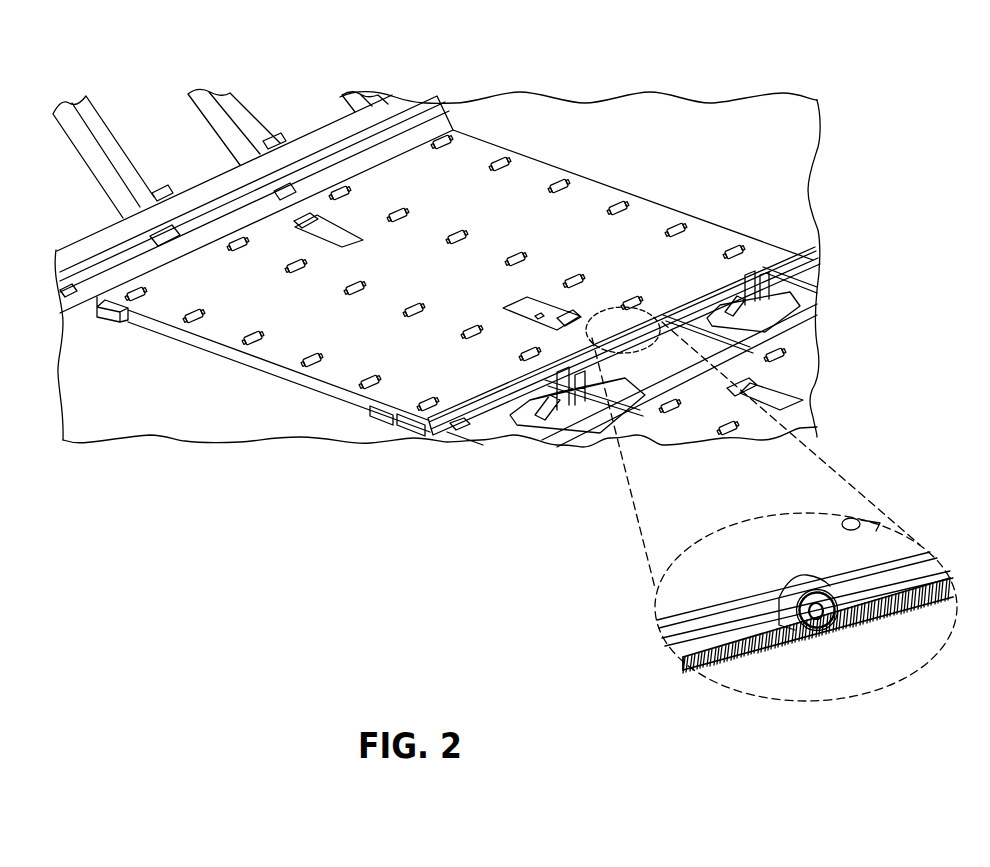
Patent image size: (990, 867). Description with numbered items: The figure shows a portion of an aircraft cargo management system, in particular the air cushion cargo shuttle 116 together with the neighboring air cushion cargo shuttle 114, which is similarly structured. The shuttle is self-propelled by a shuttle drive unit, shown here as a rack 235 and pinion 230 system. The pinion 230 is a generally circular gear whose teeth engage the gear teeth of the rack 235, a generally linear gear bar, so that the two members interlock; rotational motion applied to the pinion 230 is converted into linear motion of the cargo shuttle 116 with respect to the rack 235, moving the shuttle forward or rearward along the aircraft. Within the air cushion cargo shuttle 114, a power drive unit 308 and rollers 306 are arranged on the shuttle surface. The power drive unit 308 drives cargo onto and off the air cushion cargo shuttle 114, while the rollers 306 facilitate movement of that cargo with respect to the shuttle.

The air cushion cargo shuttle 114 is at (803, 360).
The air cushion cargo shuttle 116 is at (651, 218).
The pinion 230 is at (287, 186).
The rack 235 is at (413, 437).
The roller 306 is at (238, 250).
The power drive unit 308 is at (347, 242).